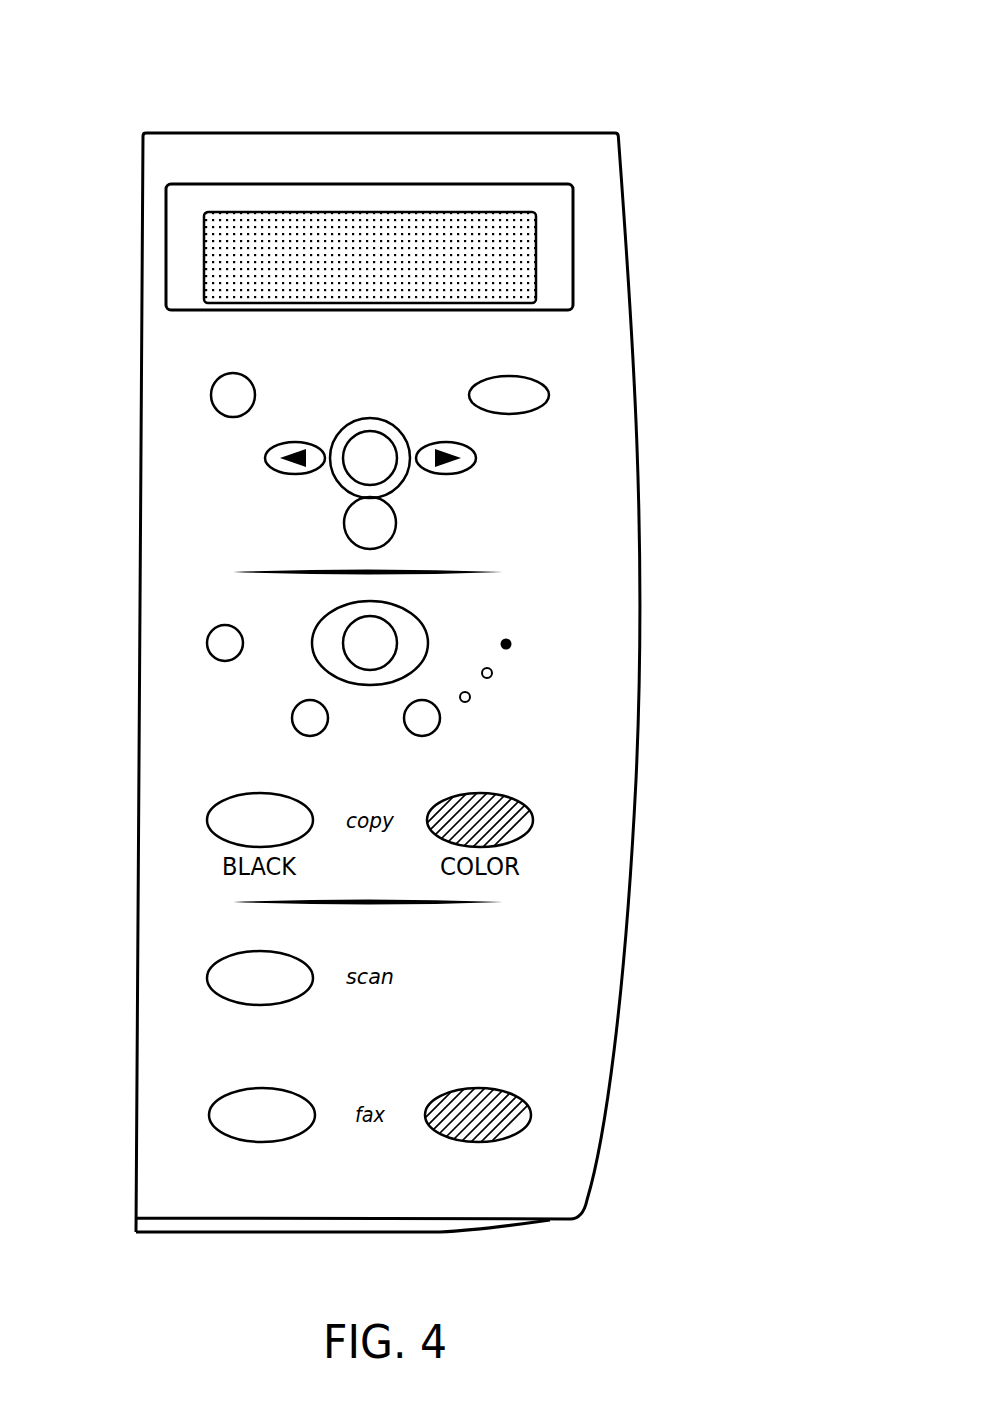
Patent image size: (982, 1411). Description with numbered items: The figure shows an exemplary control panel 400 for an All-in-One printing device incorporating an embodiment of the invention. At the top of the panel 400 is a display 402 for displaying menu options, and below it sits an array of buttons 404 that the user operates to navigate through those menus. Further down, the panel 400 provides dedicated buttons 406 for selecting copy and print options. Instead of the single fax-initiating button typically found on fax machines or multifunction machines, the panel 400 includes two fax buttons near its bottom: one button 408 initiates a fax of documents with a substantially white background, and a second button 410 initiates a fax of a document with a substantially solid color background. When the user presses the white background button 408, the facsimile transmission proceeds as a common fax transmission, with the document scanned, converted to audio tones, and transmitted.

The control panel 400 is at (196, 78).
The display 402 is at (512, 257).
The array of buttons 404 is at (580, 441).
The dedicated buttons 406 is at (600, 724).
The white background button 408 is at (243, 1103).
The solid color background button 410 is at (510, 1098).